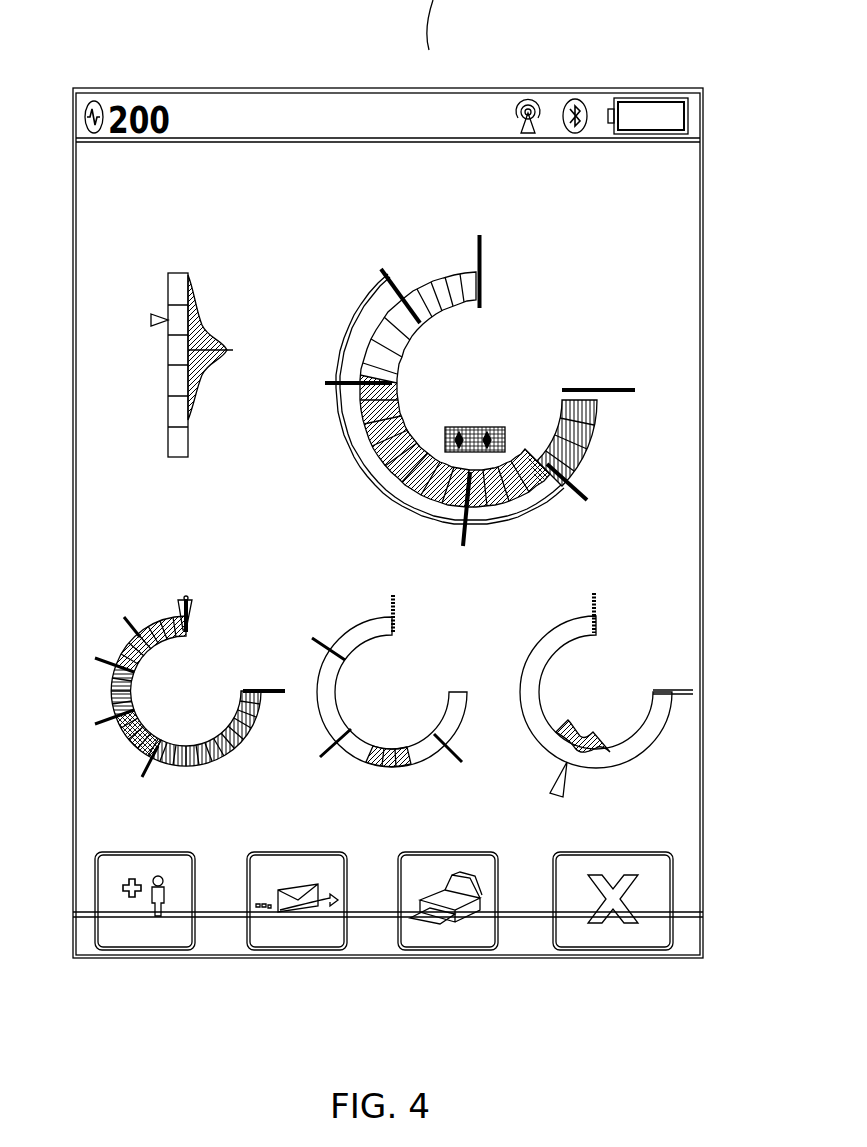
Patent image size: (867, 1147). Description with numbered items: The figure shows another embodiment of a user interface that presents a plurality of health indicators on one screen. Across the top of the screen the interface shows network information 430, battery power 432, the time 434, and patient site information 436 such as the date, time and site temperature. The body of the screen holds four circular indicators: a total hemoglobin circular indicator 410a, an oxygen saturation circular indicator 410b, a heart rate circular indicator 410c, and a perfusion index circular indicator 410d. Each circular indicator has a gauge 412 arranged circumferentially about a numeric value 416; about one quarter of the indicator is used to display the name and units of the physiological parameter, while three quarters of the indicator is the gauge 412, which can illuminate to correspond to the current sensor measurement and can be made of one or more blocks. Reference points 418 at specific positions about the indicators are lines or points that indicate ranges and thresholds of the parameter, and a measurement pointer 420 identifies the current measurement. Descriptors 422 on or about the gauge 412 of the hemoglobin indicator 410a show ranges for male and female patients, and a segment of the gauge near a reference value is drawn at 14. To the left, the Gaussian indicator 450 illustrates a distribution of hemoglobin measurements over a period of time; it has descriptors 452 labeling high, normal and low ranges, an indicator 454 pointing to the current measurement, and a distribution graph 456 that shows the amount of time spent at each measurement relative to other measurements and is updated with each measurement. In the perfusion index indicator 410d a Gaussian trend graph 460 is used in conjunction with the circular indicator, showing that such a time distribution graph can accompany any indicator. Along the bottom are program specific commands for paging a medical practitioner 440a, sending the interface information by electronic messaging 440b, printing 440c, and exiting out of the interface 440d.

The network information 430 is at (565, 100).
The battery power 432 is at (660, 103).
The time 434 is at (348, 103).
The patient site information 436 is at (680, 165).
The Gaussian indicator 450 is at (197, 236).
The descriptors 452 is at (105, 300).
The indicator 454 is at (150, 320).
The distribution graph 456 is at (208, 345).
The circular indicator 410a is at (617, 313).
The circular indicator 410b is at (250, 626).
The circular indicator 410c is at (437, 628).
The circular indicator 410d is at (610, 630).
The gauge 412 is at (452, 272).
The numeric value 416 is at (483, 360).
The reference points 418 is at (325, 383).
The measurement pointer 420 is at (183, 597).
The descriptors 422 is at (353, 457).
The scale segment 14 is at (590, 430).
The Gaussian trend graph 460 is at (603, 752).
The program specific command 440a is at (143, 952).
The program specific command 440b is at (295, 952).
The program specific command 440c is at (447, 952).
The program specific command 440d is at (612, 952).